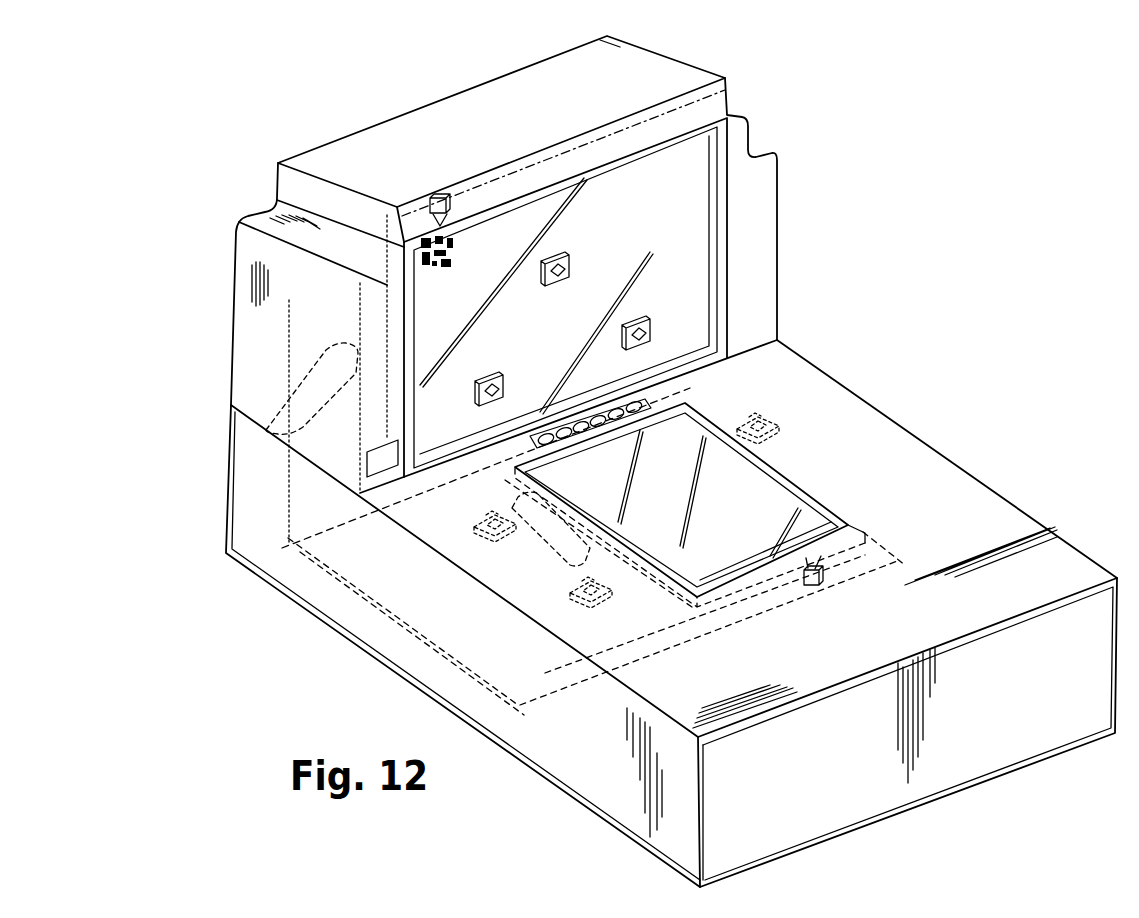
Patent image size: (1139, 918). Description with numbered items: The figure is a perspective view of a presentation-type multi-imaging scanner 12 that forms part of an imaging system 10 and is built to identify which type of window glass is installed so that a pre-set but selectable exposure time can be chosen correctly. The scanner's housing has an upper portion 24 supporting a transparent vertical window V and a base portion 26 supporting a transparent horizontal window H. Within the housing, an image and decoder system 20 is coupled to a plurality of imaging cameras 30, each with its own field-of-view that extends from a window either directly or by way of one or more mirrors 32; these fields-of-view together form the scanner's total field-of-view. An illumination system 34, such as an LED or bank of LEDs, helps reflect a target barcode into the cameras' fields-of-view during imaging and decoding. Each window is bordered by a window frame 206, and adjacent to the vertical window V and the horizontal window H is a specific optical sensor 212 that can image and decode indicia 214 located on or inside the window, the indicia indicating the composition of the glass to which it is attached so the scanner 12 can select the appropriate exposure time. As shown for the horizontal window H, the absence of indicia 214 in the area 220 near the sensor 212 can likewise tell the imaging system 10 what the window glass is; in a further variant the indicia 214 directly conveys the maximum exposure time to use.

The imaging system 10 is at (322, 82).
The multi-imaging scanner 12 is at (347, 160).
The image and decoder system 20 is at (385, 277).
The upper portion 24 is at (653, 73).
The base portion 26 is at (767, 803).
The imaging cameras 30 is at (625, 335).
The mirrors 32 is at (268, 428).
The illumination system 34 is at (638, 430).
The window frame 206 is at (563, 165).
The optical sensor 212 is at (443, 193).
The indicia 214 is at (440, 272).
The area 220 is at (810, 528).
The vertical window V is at (480, 245).
The horizontal window H is at (738, 523).